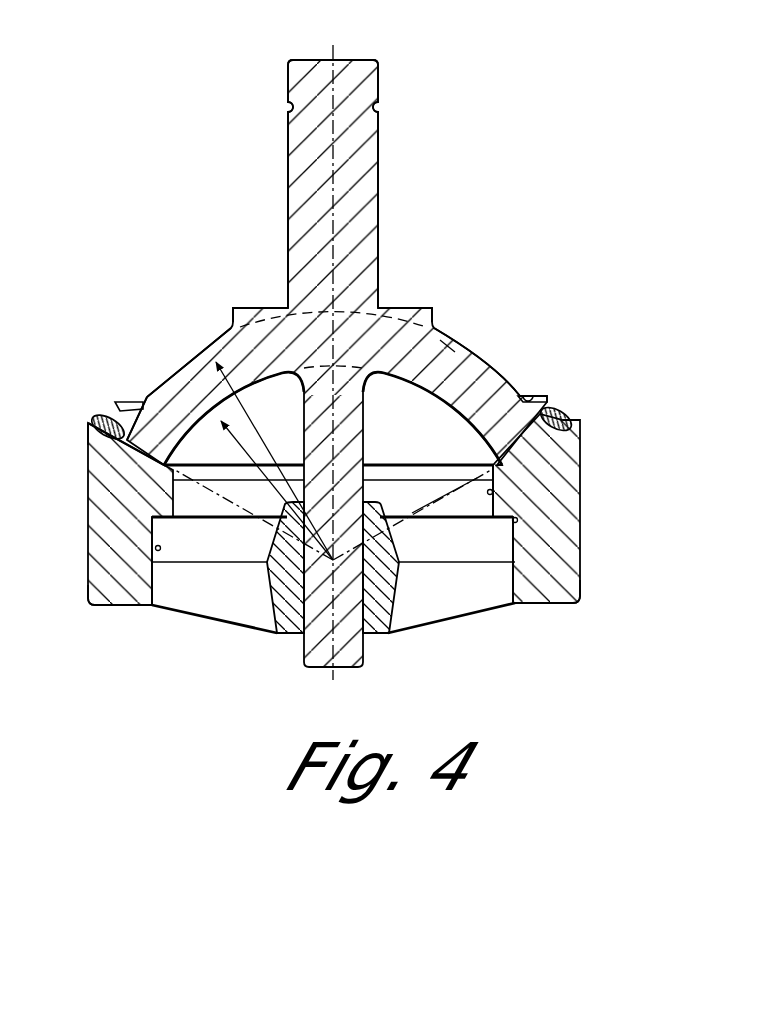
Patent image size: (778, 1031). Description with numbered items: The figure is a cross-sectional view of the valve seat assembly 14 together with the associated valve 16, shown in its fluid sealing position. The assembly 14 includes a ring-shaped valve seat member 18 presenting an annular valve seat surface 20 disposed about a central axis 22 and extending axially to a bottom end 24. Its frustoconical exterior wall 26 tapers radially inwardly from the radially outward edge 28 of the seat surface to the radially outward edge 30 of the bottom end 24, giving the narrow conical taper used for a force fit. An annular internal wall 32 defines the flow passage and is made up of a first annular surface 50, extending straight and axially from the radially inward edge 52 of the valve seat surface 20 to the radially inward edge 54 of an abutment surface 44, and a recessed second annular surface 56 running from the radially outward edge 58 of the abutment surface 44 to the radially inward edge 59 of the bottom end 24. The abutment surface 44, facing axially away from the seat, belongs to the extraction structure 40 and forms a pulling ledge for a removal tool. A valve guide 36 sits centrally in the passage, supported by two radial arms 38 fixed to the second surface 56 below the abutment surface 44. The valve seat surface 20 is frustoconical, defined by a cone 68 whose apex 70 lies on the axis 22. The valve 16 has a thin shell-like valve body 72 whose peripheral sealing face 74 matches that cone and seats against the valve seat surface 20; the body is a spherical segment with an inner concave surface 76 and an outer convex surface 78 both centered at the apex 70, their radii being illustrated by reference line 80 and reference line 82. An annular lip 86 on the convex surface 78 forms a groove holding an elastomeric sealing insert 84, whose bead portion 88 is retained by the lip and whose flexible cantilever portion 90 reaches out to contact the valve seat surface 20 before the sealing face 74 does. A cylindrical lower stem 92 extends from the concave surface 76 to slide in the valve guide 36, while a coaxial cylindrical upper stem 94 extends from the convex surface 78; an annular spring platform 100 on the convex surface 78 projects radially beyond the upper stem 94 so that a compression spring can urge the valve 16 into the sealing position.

The valve seat assembly 14 is at (560, 243).
The valve 16 is at (467, 356).
The valve seat member 18 is at (588, 437).
The valve seat surface 20 is at (160, 462).
The central axis 22 is at (335, 47).
The bottom end 24 is at (540, 604).
The frustoconical exterior wall 26 is at (87, 495).
The radially outward edge of the valve seat surface 28 is at (87, 423).
The radially outward edge of the bottom end 30 is at (97, 606).
The annular internal wall 32 is at (183, 503).
The valve guide 36 is at (273, 634).
The radial arms 38 is at (230, 618).
The extraction structure 40 is at (168, 528).
The abutment surface 44 is at (503, 520).
The first annular surface 50 is at (492, 492).
The radially inward edge of the valve seat surface 52 is at (377, 470).
The radially inward edge of the abutment surface 54 is at (492, 518).
The second annular surface 56 is at (156, 548).
The radially outward edge of the abutment surface 58 is at (517, 521).
The radially inward edge of the bottom end 59 is at (152, 608).
The cone 68 is at (220, 500).
The apex 70 is at (375, 590).
The valve body 72 is at (496, 360).
The peripheral sealing face 74 is at (124, 446).
The inner concave surface 76 is at (463, 360).
The outer convex surface 78 is at (445, 337).
The reference line 80 is at (248, 418).
The reference line 82 is at (228, 430).
The elastomeric sealing insert 84 is at (100, 417).
The annular lip 86 is at (123, 400).
The bead portion 88 is at (548, 397).
The flexible cantilever portion 90 is at (575, 413).
The cylindrical lower stem 92 is at (368, 425).
The cylindrical upper stem 94 is at (379, 176).
The annular spring platform 100 is at (410, 305).